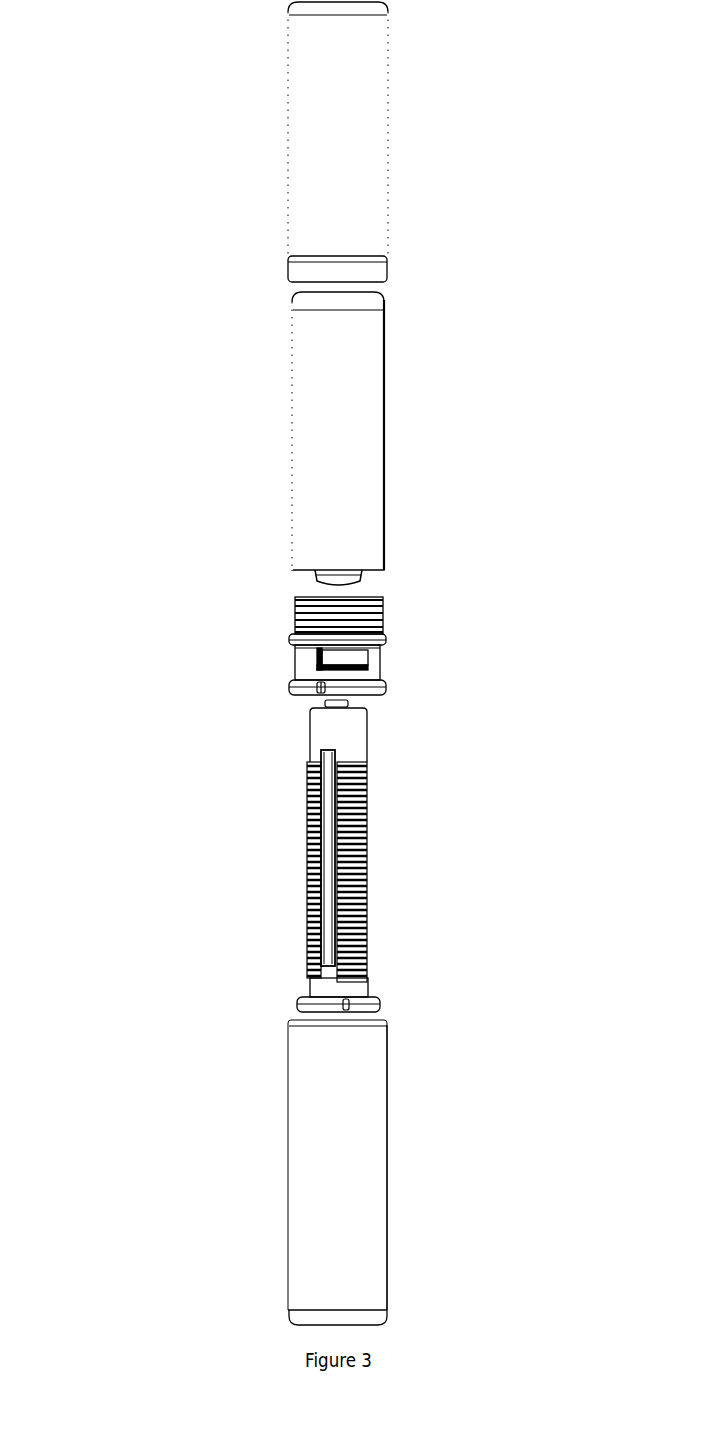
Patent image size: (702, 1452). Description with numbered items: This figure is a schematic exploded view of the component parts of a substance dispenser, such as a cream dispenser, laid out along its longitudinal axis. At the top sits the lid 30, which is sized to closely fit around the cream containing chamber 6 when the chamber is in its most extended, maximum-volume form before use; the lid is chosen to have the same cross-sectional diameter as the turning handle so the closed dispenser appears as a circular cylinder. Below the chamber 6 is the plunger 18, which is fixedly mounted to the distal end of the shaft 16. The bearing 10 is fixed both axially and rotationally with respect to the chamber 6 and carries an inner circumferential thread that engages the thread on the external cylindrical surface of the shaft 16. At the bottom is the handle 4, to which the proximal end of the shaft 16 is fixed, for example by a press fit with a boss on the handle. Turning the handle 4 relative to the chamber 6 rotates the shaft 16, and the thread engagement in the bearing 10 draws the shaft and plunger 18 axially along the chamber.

The lid 30 is at (306, 148).
The cream containing chamber 6 is at (382, 433).
The plunger 18 is at (363, 573).
The bearing 10 is at (295, 603).
The shaft 16 is at (357, 747).
The handle 4 is at (388, 1208).